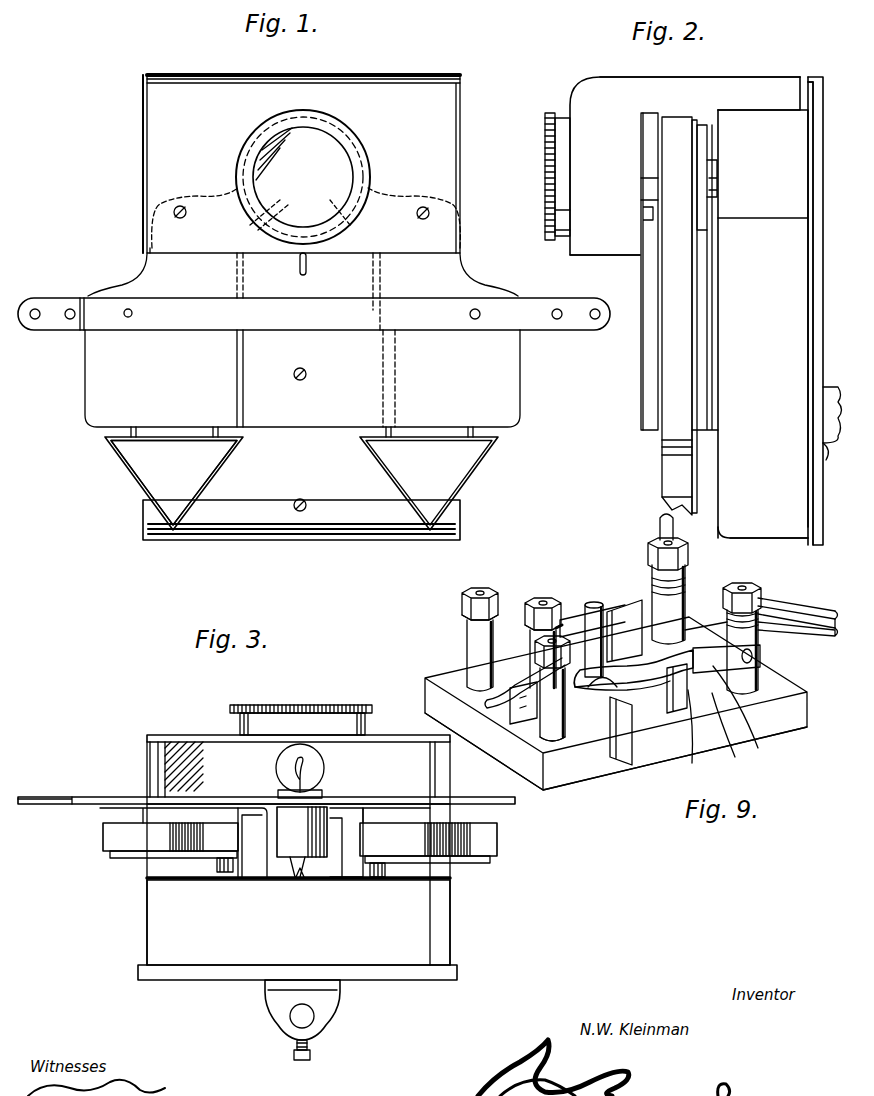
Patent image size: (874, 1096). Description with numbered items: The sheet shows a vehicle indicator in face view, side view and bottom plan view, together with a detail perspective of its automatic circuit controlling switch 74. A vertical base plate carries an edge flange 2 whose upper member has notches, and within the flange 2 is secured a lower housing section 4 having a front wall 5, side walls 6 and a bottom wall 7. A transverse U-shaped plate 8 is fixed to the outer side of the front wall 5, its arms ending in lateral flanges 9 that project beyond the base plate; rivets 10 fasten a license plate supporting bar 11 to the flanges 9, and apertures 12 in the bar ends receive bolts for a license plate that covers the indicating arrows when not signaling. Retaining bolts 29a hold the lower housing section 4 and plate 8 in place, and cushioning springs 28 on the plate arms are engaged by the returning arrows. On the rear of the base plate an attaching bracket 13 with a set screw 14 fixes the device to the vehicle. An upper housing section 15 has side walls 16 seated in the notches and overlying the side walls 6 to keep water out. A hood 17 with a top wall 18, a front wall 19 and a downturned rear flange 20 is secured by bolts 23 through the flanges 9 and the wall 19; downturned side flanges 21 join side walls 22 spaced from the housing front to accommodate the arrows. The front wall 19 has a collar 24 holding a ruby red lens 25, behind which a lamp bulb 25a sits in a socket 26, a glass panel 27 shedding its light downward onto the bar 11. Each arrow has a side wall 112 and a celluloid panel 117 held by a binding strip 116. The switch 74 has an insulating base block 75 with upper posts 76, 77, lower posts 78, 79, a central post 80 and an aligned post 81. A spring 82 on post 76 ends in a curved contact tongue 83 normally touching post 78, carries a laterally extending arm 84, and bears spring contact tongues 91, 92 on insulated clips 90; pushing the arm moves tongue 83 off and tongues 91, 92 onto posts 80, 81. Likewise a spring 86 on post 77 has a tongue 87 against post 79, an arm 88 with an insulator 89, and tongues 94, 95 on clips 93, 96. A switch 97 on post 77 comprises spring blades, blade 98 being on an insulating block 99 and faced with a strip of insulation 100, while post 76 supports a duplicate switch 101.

In FIG. 2, the flange 2 is at (812, 284).
In FIG. 2, the lower housing section 4 is at (744, 540).
In FIG. 1, the front wall 5 is at (333, 530).
In FIG. 2, the side walls 6 is at (790, 402).
In FIG. 3, the bottom wall 7 is at (455, 940).
In FIG. 1, the U-shaped plate 8 is at (278, 415).
In FIG. 3, the U-shaped plate 8 is at (268, 885).
In FIG. 1, the flanges 9 is at (505, 386).
In FIG. 3, the flanges 9 is at (505, 810).
In FIG. 1, the rivets 10 is at (130, 318).
In FIG. 1, the license plate supporting bar 11 is at (338, 322).
In FIG. 3, the license plate supporting bar 11 is at (94, 796).
In FIG. 1, the apertures 12 is at (70, 308).
In FIG. 2, the attaching bracket 13 is at (831, 461).
In FIG. 3, the attaching bracket 13 is at (330, 1010).
In FIG. 3, the set screw 14 is at (312, 1058).
In FIG. 2, the upper housing section 15 is at (748, 125).
In FIG. 2, the side walls 16 is at (763, 324).
In FIG. 2, the hood 17 is at (584, 85).
In FIG. 1, the top wall 18 is at (162, 75).
In FIG. 2, the top wall 18 is at (806, 77).
In FIG. 1, the front wall 19 is at (412, 100).
In FIG. 2, the downturned rear flange 20 is at (812, 118).
In FIG. 2, the downturned side flanges 21 is at (650, 88).
In FIG. 1, the side walls 22 is at (303, 264).
In FIG. 2, the side walls 22 is at (605, 238).
In FIG. 1, the bolts 23 is at (430, 214).
In FIG. 2, the collar 24 is at (558, 112).
In FIG. 3, the collar 24 is at (300, 712).
In FIG. 1, the lens 25 is at (296, 135).
In FIG. 3, the lamp bulb 25a is at (324, 770).
In FIG. 3, the socket 26 is at (330, 885).
In FIG. 3, the glass panel 27 is at (222, 752).
In FIG. 3, the cushioning springs 28 is at (382, 878).
In FIG. 1, the retaining bolts 29a is at (295, 369).
In FIG. 9, the automatic circuit controlling switch 74 is at (798, 730).
In FIG. 9, the insulating base block 75 is at (660, 775).
In FIG. 9, the post 76 is at (682, 588).
In FIG. 9, the post 77 is at (762, 640).
In FIG. 9, the post 78 is at (470, 622).
In FIG. 9, the post 79 is at (545, 735).
In FIG. 9, the post 80 is at (515, 600).
In FIG. 9, the post 81 is at (588, 600).
In FIG. 9, the spring 82 is at (628, 600).
In FIG. 9, the curved contact tongue 83 is at (500, 682).
In FIG. 9, the laterally extending arm 84 is at (530, 605).
In FIG. 9, the spring 86 is at (758, 742).
In FIG. 9, the curved contact tongue 87 is at (510, 705).
In FIG. 9, the laterally extending arm 88 is at (615, 768).
In FIG. 9, the insulator 89 is at (680, 708).
In FIG. 9, the clip 90 is at (628, 612).
In FIG. 9, the spring contact tongue 91 is at (560, 612).
In FIG. 9, the spring contact tongue 92 is at (680, 632).
In FIG. 9, the clip 93 is at (692, 750).
In FIG. 9, the spring contact tongue 94 is at (580, 715).
In FIG. 9, the spring contact tongue 95 is at (660, 670).
In FIG. 9, the clip 96 is at (735, 745).
In FIG. 9, the switch 97 is at (800, 596).
In FIG. 9, the spring blade 98 is at (790, 605).
In FIG. 9, the insulating block 99 is at (727, 620).
In FIG. 9, the strip of insulation 100 is at (810, 605).
In FIG. 9, the switch 101 is at (650, 545).
In FIG. 2, the side wall 112 is at (700, 418).
In FIG. 1, the binding strip 116 is at (113, 455).
In FIG. 2, the binding strip 116 is at (670, 398).
In FIG. 1, the celluloid panel 117 is at (148, 478).
In FIG. 2, the celluloid panel 117 is at (662, 357).